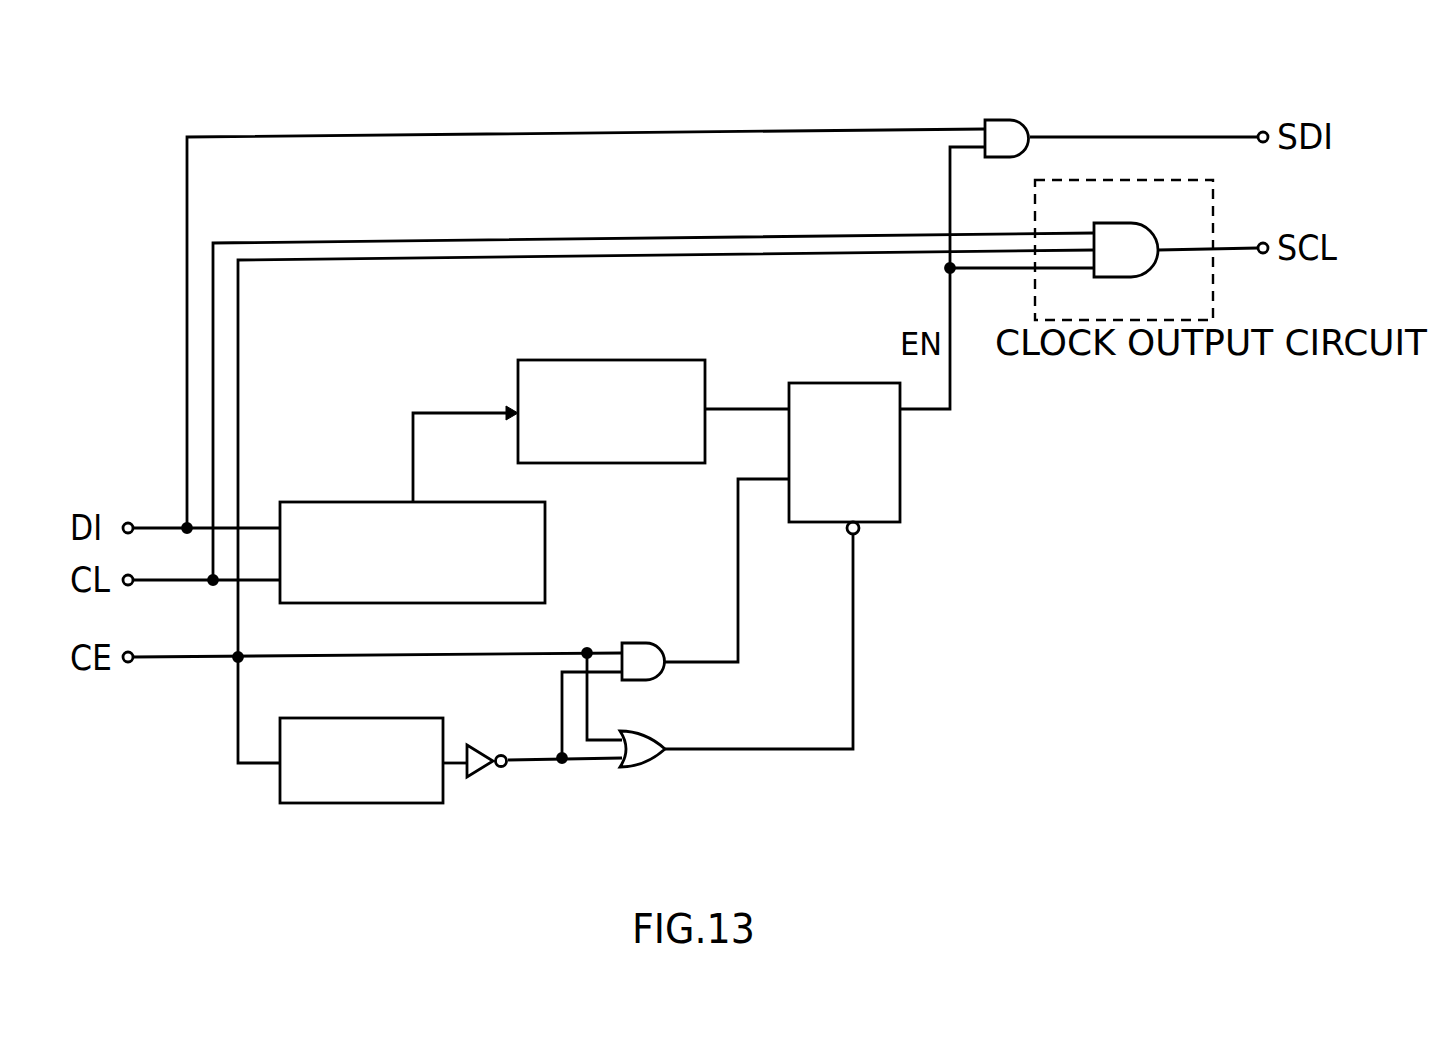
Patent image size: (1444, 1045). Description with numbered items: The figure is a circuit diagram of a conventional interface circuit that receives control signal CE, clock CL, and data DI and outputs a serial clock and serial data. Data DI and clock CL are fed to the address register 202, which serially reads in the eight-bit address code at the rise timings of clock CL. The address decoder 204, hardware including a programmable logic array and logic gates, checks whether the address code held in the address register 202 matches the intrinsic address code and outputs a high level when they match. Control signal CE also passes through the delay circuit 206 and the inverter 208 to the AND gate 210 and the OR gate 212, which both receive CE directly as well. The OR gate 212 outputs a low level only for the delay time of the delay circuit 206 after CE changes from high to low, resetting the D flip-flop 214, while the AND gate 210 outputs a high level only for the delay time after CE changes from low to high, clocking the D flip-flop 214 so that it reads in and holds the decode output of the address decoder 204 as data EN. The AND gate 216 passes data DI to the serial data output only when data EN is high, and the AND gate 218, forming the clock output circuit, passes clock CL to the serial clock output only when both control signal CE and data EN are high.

The address register 202 is at (332, 502).
The address decoder 204 is at (645, 360).
The delay circuit 206 is at (342, 803).
The inverter 208 is at (477, 772).
The AND gate 210 is at (632, 643).
The OR gate 212 is at (640, 770).
The D flip-flop 214 is at (883, 522).
The AND gate 216 is at (1018, 120).
The AND gate 218 is at (1158, 240).